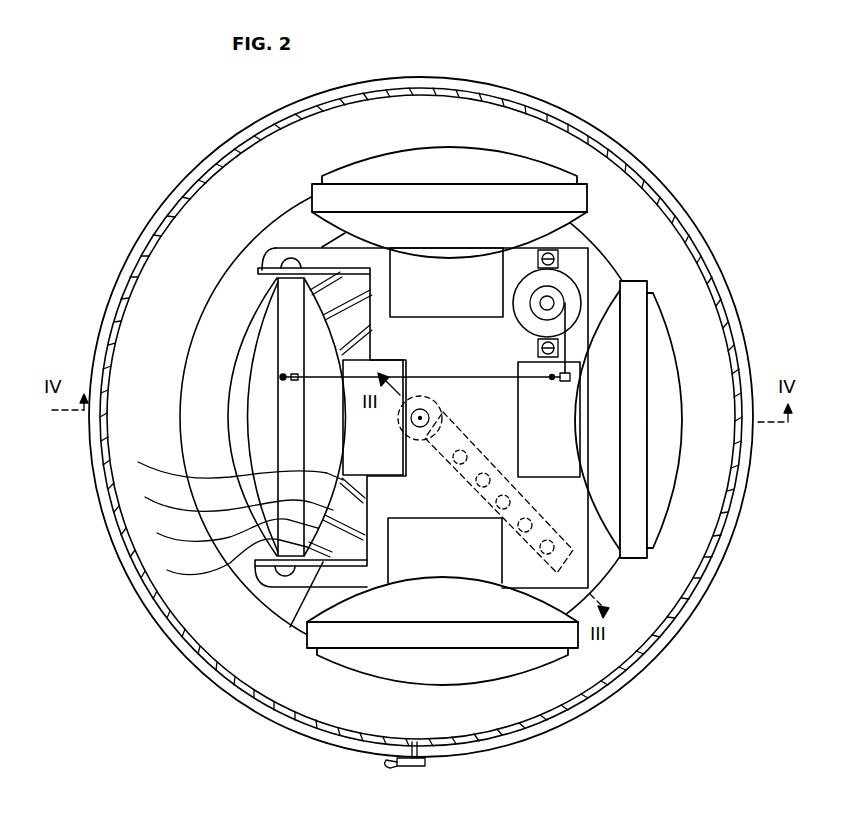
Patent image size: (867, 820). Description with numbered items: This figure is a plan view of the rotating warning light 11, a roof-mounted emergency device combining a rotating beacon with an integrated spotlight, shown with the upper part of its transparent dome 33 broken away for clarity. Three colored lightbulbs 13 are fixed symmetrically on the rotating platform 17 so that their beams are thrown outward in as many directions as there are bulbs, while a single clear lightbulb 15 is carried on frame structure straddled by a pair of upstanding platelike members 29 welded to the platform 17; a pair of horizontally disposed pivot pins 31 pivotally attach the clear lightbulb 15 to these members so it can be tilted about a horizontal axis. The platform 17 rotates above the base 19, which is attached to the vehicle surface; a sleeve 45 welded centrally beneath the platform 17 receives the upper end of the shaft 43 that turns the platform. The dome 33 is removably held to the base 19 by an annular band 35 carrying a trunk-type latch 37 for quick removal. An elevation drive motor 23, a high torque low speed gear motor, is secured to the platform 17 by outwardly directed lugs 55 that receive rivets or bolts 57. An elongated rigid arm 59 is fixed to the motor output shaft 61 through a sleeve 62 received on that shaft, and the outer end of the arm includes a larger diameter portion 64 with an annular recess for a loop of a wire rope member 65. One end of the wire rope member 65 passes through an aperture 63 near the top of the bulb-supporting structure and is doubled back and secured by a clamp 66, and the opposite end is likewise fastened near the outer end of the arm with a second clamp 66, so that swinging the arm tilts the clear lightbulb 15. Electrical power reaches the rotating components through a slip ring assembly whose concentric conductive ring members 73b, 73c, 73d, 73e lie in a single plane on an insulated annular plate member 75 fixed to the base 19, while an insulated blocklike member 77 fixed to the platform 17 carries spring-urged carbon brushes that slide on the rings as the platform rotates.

The rotating warning light 11 is at (47, 136).
The colored lightbulbs 13 is at (417, 163).
The clear lightbulb 15 is at (262, 352).
The rotating platform 17 is at (575, 262).
The base 19 is at (195, 600).
The elevation drive motor 23 is at (581, 296).
The platelike members 29 is at (322, 265).
The pivot pins 31 is at (288, 248).
The transparent dome 33 is at (693, 588).
The annular band 35 is at (620, 680).
The trunk-type latch 37 is at (411, 770).
The shaft 43 is at (430, 410).
The sleeve 45 is at (447, 413).
The lugs 55 is at (556, 260).
The rivets or bolts 57 is at (547, 246).
The rigid arm 59 is at (580, 357).
The output shaft 61 is at (540, 298).
The sleeve 62 is at (545, 305).
The aperture 63 is at (284, 373).
The larger diameter portion 64 is at (565, 383).
The wire rope member 65 is at (323, 378).
The clamp 66 is at (297, 374).
The ring member 73b is at (235, 465).
The ring member 73c is at (234, 496).
The ring member 73d is at (231, 527).
The ring member 73e is at (231, 557).
The insulated annular plate member 75 is at (205, 438).
The insulated blocklike member 77 is at (447, 432).